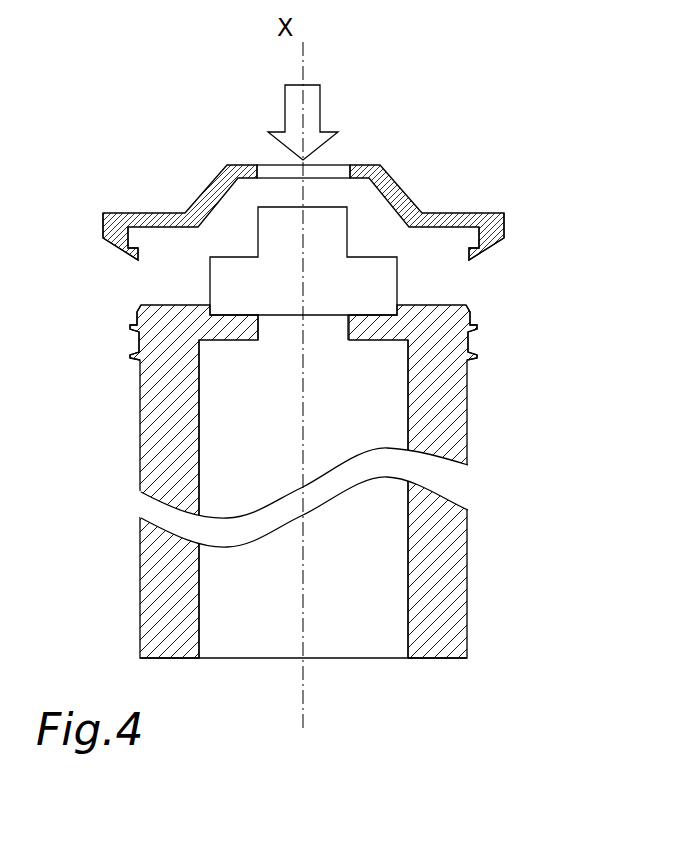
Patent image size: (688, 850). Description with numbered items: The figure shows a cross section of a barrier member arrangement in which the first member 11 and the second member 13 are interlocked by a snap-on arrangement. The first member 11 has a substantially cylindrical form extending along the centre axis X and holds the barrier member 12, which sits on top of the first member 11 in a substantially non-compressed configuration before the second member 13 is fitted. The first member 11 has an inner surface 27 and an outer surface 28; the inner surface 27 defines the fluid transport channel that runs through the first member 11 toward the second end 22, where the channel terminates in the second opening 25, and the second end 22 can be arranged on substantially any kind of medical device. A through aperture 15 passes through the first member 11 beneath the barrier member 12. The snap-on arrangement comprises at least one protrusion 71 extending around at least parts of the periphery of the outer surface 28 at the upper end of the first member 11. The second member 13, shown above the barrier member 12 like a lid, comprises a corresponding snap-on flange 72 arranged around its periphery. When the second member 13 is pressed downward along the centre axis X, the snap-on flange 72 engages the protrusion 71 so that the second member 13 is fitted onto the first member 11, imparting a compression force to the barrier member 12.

The first member 11 is at (486, 473).
The barrier member 12 is at (233, 279).
The second member 13 is at (126, 176).
The through aperture 15 is at (313, 333).
The second end 22 is at (375, 658).
The second opening 25 is at (273, 642).
The inner surface 27 is at (158, 436).
The outer surface 28 is at (445, 426).
The protrusion 71 is at (132, 354).
The snap-on flange 72 is at (118, 246).